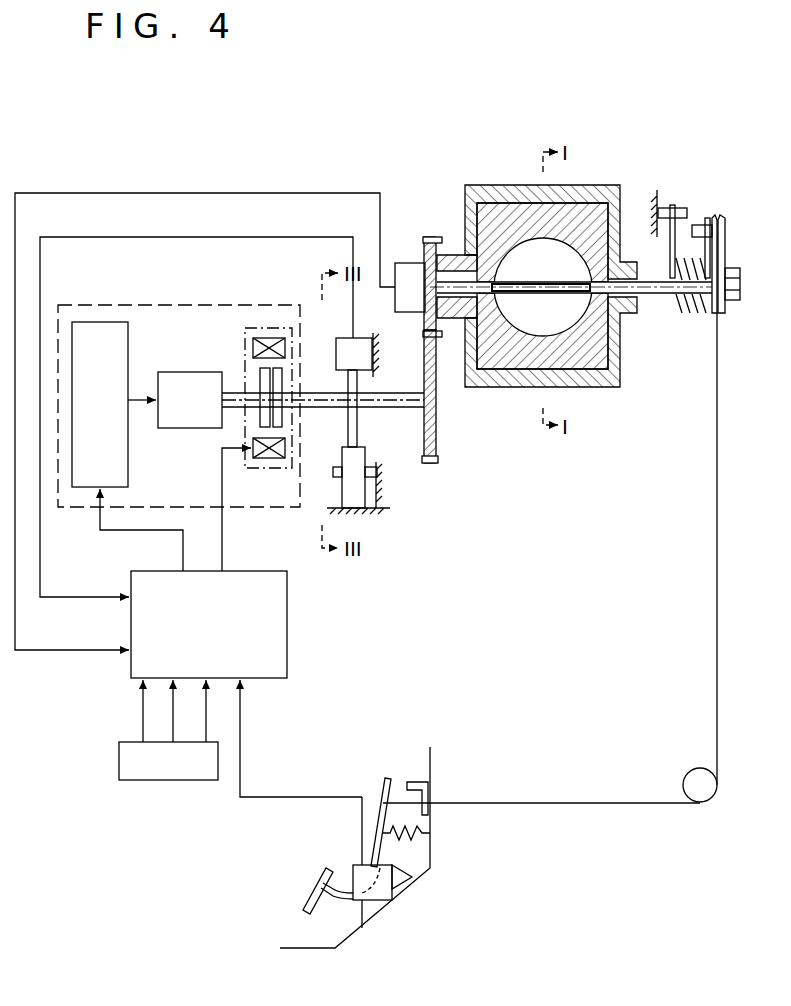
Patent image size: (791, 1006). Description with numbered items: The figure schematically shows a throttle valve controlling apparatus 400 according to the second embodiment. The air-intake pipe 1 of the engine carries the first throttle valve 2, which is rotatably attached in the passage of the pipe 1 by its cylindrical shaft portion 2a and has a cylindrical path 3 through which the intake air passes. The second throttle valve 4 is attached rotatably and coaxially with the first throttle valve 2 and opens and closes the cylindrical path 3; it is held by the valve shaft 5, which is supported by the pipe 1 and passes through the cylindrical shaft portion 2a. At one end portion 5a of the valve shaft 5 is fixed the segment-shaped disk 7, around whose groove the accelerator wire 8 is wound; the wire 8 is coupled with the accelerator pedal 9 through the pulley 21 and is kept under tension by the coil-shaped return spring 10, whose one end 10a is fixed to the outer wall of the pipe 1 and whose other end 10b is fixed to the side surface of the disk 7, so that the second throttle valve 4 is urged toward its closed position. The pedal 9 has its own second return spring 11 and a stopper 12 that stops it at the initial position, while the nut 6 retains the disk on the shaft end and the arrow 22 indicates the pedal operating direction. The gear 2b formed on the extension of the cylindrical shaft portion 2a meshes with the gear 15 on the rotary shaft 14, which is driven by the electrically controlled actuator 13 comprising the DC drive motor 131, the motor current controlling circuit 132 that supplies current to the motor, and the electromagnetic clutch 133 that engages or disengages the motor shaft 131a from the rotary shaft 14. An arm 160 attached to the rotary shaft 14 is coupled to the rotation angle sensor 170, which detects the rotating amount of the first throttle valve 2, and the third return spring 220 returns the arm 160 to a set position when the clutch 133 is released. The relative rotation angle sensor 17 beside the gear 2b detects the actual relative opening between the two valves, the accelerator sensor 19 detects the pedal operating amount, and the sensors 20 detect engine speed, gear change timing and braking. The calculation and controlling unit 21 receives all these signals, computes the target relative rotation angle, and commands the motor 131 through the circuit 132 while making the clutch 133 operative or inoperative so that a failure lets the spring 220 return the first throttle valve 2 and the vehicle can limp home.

The throttle valve controlling apparatus 400 is at (333, 170).
The air-intake pipe 1 is at (605, 386).
The first throttle valve 2 is at (487, 357).
The cylindrical shaft portion 2a is at (457, 238).
The gear 2b is at (424, 250).
The cylindrical path 3 is at (517, 363).
The second throttle valve 4 is at (585, 291).
The valve shaft 5 is at (522, 262).
The one end portion of the valve shaft 5a is at (722, 318).
The nut 6 is at (733, 300).
The segment-shaped disk 7 is at (727, 225).
The accelerator wire 8 is at (716, 525).
The accelerator pedal 9 is at (323, 887).
The return spring 10 is at (690, 313).
The one end of the return spring 10a is at (658, 200).
The other end of the return spring 10b is at (702, 223).
The second return spring 11 is at (410, 843).
The stopper 12 is at (418, 780).
The electrically controlled actuator 13 is at (220, 305).
The rotary shaft 14 is at (420, 402).
The gear 15 is at (434, 460).
The relative rotation angle sensor 17 is at (408, 305).
The accelerator sensor 19 is at (350, 877).
The sensors 20 is at (175, 781).
The calculation and controlling unit 21 is at (287, 663).
The pedal depression direction 22 is at (318, 923).
The DC drive motor 131 is at (170, 372).
The motor shaft 131a is at (233, 393).
The motor current controlling circuit 132 is at (102, 322).
The electromagnetic clutch 133 is at (277, 468).
The arm 160 is at (357, 428).
The rotation angle sensor 170 is at (362, 350).
The third return spring 220 is at (357, 490).